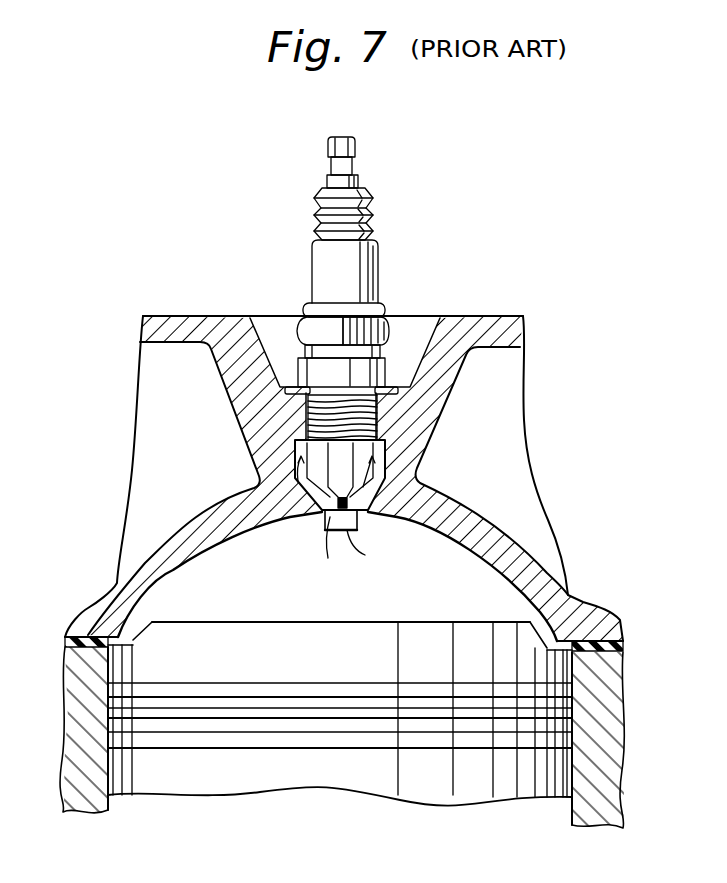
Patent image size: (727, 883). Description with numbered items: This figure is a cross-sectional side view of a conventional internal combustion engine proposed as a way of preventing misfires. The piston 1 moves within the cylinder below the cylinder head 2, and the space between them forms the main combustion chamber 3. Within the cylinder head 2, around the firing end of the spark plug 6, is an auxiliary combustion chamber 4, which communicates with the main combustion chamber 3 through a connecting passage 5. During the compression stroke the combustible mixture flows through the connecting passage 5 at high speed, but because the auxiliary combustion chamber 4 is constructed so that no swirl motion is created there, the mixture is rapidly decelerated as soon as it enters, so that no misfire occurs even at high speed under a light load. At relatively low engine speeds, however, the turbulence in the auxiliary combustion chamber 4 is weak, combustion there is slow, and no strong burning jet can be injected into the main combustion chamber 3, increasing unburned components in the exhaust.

The piston 1 is at (178, 646).
The cylinder head 2 is at (237, 337).
The main combustion chamber 3 is at (470, 572).
The auxiliary combustion chamber 4 is at (380, 455).
The connecting passage 5 is at (327, 533).
The spark plug 6 is at (357, 277).